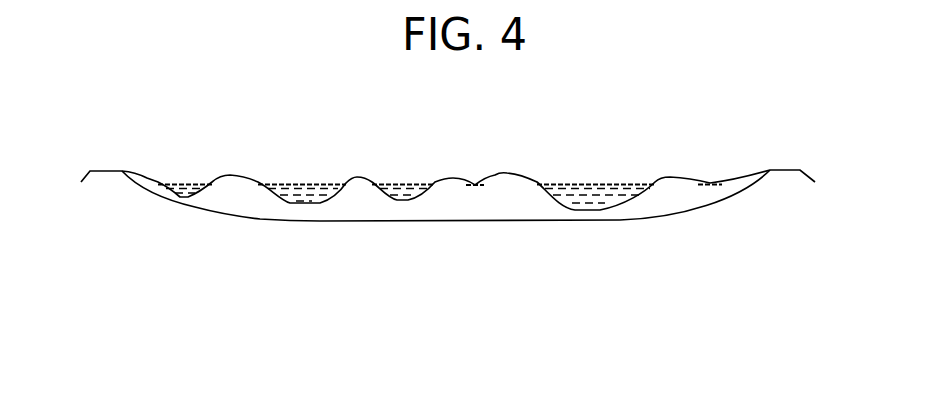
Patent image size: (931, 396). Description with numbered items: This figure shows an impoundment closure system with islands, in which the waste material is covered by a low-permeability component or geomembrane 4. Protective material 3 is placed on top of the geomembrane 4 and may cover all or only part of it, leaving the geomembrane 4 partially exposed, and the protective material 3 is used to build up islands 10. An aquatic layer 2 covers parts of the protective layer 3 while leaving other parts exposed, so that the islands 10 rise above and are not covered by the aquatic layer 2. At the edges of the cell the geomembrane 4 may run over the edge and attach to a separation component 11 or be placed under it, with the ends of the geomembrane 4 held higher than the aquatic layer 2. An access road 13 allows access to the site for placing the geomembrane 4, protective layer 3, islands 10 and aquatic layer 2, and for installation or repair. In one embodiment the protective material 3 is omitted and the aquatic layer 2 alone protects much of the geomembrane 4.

The aquatic layer 2 is at (593, 207).
The protective material 3 is at (687, 197).
The low-permeability component or geomembrane 4 is at (488, 222).
The islands 10 is at (255, 178).
The separation component 11 is at (102, 178).
The access road 13 is at (793, 170).